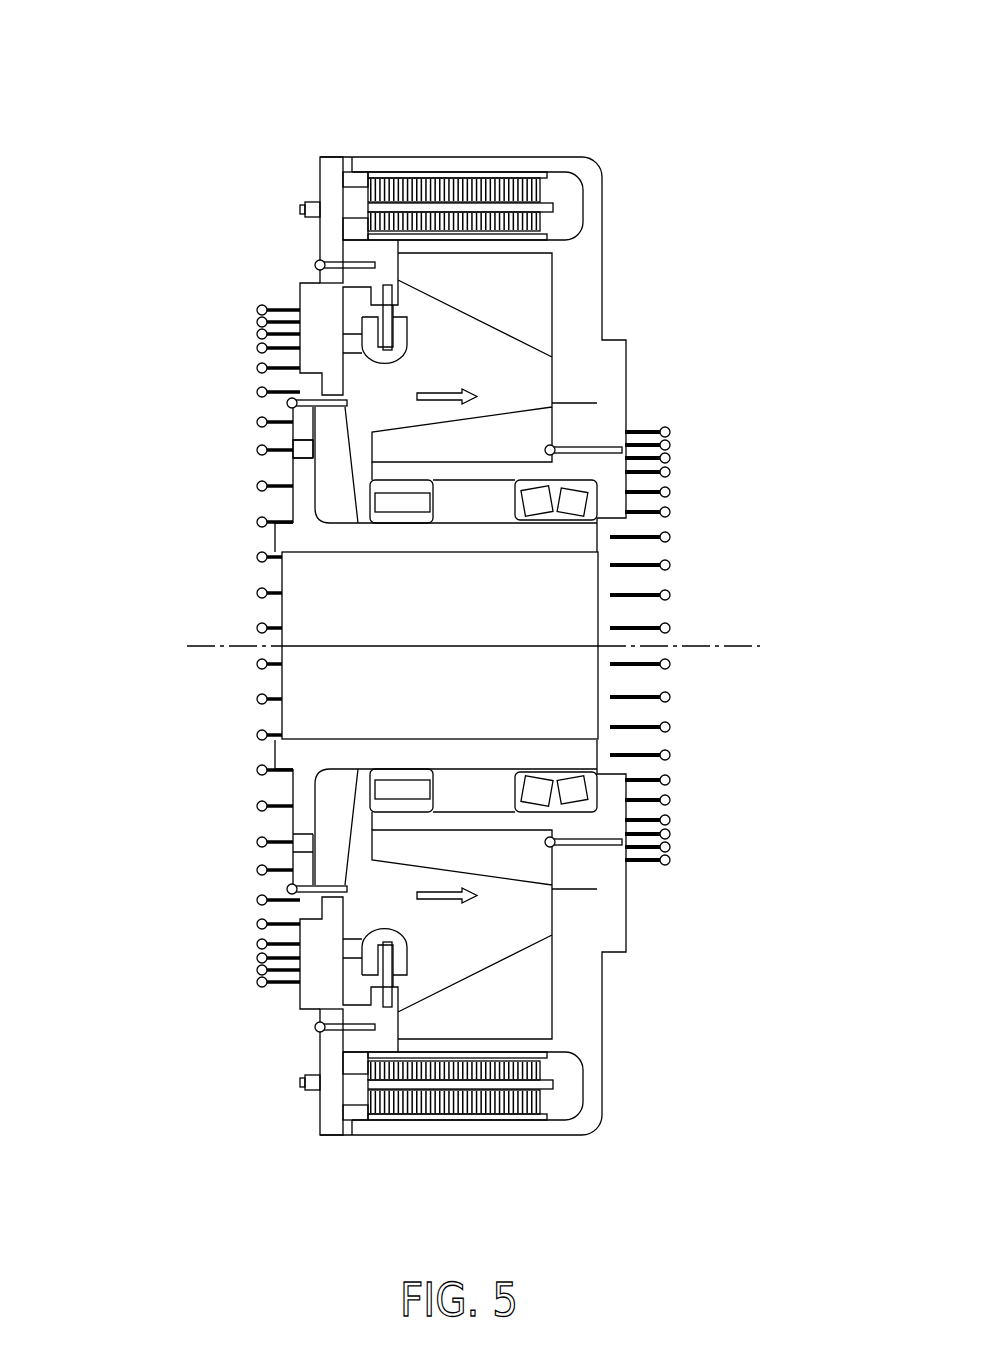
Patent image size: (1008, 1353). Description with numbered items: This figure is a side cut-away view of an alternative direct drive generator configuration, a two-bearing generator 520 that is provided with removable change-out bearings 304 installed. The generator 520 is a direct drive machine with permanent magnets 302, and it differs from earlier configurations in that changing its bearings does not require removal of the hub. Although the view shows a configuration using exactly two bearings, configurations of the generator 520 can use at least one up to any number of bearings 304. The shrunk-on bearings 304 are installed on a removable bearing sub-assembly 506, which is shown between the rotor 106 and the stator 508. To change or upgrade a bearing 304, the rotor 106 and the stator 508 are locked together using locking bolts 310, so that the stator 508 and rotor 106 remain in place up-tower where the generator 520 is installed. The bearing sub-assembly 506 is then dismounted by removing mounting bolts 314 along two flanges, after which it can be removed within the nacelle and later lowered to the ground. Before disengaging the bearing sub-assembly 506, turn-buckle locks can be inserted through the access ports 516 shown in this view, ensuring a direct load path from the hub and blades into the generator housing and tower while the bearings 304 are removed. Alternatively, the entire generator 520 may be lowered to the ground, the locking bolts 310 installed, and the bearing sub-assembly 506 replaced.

The two-bearing generator 520 is at (680, 50).
The rotor 106 is at (604, 205).
The permanent magnets 302 is at (565, 183).
The stator 508 is at (320, 177).
The locking bolts 310 is at (315, 265).
The mounting bolts 314 is at (605, 447).
The removable bearings 304 is at (433, 502).
The removable bearing sub-assembly 506 is at (282, 575).
The access ports 516 is at (293, 444).